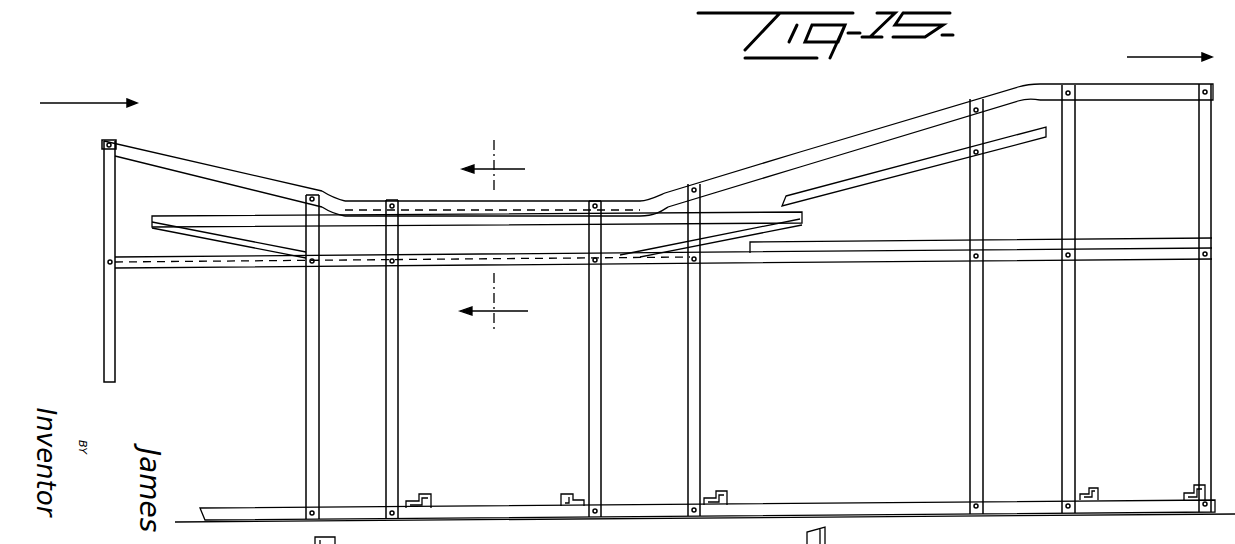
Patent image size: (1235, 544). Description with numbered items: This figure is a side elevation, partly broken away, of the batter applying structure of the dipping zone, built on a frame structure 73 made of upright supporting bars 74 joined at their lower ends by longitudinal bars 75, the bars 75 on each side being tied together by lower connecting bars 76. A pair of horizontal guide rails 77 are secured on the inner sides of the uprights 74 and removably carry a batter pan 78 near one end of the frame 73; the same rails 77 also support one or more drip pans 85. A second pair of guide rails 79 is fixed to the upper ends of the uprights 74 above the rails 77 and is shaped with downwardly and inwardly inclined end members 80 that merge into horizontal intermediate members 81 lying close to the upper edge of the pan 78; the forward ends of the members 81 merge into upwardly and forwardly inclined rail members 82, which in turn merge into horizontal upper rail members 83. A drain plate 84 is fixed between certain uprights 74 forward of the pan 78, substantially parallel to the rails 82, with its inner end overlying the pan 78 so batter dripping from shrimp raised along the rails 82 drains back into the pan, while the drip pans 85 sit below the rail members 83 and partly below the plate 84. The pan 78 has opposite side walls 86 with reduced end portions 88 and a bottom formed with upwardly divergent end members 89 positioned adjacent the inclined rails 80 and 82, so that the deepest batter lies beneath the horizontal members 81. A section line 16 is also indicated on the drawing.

The section line 16- 16 is at (512, 236).
The frame structure 73 is at (855, 136).
The upright supporting bars 74 is at (983, 405).
The longitudinal bars 75 is at (875, 505).
The lower connecting bars 76 is at (423, 497).
The guide rails 77 is at (820, 258).
The batter pan 78 is at (628, 243).
The second pair of guide rails 79 is at (361, 204).
The downwardly and inwardly inclined end members 80 is at (223, 177).
The horizontal intermediate members 81 is at (425, 202).
The upwardly and forwardly inclined rail members 82 is at (760, 162).
The horizontal upper rail members 83 is at (1092, 92).
The drain plate 84 is at (915, 170).
The drip pans 85 is at (1113, 242).
The side walls 86 is at (477, 231).
The reduced end portions 88 is at (720, 232).
The upwardly divergent end members 89 is at (248, 247).